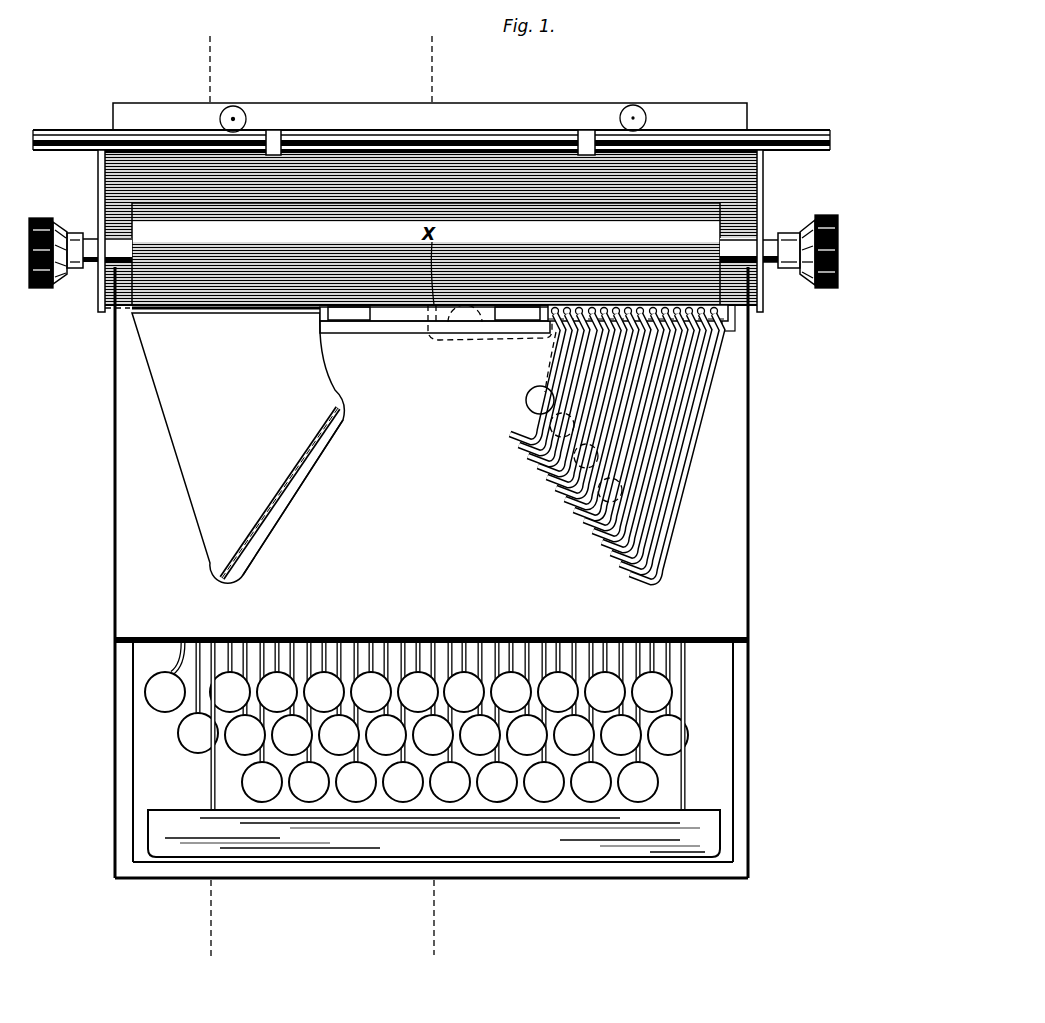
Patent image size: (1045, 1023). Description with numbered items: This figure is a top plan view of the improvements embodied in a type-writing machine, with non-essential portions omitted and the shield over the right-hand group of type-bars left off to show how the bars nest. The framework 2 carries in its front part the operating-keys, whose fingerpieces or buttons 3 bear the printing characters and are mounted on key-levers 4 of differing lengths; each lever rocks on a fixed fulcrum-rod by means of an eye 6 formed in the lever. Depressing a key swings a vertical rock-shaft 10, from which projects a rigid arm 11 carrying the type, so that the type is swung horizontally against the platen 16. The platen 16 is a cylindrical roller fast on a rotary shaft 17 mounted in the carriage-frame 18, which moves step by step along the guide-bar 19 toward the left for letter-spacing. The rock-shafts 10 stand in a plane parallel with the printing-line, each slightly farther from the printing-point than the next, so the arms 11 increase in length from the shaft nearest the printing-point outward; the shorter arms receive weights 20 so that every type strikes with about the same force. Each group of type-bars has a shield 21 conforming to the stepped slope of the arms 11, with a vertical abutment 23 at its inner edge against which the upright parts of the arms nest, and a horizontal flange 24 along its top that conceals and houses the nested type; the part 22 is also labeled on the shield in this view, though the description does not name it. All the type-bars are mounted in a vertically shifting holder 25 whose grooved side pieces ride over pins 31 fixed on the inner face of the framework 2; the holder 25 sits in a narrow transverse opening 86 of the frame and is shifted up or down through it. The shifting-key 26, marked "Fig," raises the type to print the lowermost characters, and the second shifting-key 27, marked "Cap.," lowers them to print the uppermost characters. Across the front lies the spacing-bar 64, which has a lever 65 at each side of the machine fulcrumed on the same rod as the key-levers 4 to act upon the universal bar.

The framework 2 is at (680, 108).
The fingerpieces or buttons 3 is at (405, 790).
The key-levers 4 is at (623, 763).
The eye 6 is at (207, 500).
The rock-shaft 10 is at (556, 322).
The rigid arm 11 is at (665, 488).
The platen 16 is at (722, 228).
The rotary shaft 17 is at (90, 228).
The carriage-frame 18 is at (588, 133).
The guide-bar 19 is at (791, 126).
The weights 20 is at (546, 392).
The shield 21 is at (186, 472).
The carriage bottom 22 is at (237, 311).
The vertical abutment 23 is at (280, 493).
The horizontal flange 24 is at (303, 481).
The shifting holder 25 is at (360, 319).
The shifting-key 26 is at (165, 712).
The second shifting-key 27 is at (196, 753).
The pins 31 is at (110, 330).
The spacing-bar 64 is at (434, 833).
The lever 65 is at (686, 781).
The transverse opening 86 is at (415, 334).